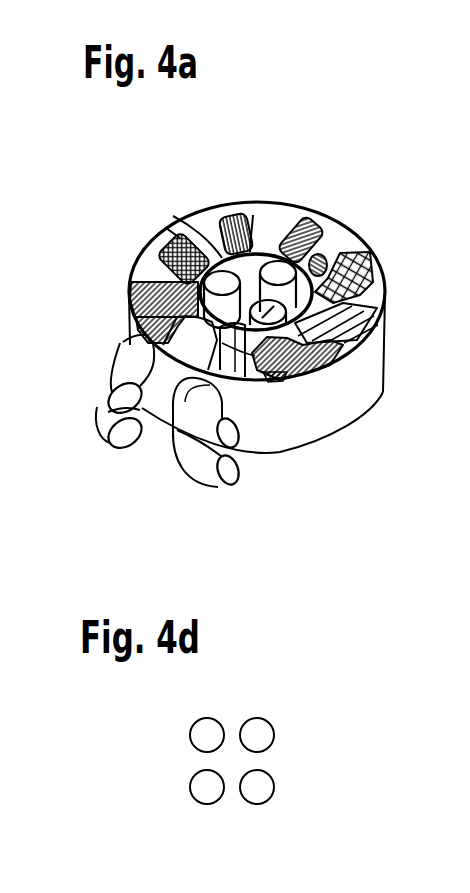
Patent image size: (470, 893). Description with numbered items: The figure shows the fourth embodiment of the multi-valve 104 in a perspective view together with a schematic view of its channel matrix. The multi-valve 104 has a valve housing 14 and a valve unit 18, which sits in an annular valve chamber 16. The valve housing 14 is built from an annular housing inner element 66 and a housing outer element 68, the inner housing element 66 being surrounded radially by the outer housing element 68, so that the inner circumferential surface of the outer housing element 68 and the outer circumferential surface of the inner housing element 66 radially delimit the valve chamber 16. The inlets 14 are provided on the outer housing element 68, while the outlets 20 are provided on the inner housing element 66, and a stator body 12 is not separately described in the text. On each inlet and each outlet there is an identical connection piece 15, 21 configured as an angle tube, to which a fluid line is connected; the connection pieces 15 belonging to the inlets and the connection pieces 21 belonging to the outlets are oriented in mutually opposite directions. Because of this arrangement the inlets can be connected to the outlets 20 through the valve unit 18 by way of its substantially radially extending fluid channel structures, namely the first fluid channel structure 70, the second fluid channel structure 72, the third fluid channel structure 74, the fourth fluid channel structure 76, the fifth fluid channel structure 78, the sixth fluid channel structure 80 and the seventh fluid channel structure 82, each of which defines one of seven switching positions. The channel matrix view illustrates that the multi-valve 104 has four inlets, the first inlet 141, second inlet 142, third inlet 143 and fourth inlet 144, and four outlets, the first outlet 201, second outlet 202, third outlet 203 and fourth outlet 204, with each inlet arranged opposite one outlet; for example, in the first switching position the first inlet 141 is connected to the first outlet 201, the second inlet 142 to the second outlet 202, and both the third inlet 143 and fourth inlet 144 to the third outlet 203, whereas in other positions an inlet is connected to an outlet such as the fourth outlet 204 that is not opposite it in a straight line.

In FIG. 4A, the multi-valve 104 is at (362, 193).
In FIG. 4A, the stator 12 is at (334, 233).
In FIG. 4A, the valve housing 14 is at (172, 418).
In FIG. 4A, the connection piece 15 is at (103, 362).
In FIG. 4A, the valve chamber 16 is at (275, 226).
In FIG. 4A, the valve unit 18 is at (305, 195).
In FIG. 4A, the outlet 20 is at (240, 375).
In FIG. 4A, the connection piece 21 is at (342, 309).
In FIG. 4A, the housing inner element 66 is at (172, 222).
In FIG. 4A, the housing outer element 68 is at (252, 215).
In FIG. 4A, the first fluid channel structure 70 is at (147, 272).
In FIG. 4A, the second fluid channel structure 72 is at (157, 242).
In FIG. 4A, the third fluid channel structure 74 is at (235, 212).
In FIG. 4A, the fourth fluid channel structure 76 is at (380, 266).
In FIG. 4A, the fifth fluid channel structure 78 is at (372, 300).
In FIG. 4A, the sixth fluid channel structure 80 is at (340, 423).
In FIG. 4A, the seventh fluid channel structure 82 is at (272, 452).
In FIG. 4D, the first inlet 141 is at (192, 787).
In FIG. 4D, the second inlet 142 is at (192, 735).
In FIG. 4D, the third inlet 143 is at (272, 735).
In FIG. 4D, the fourth inlet 144 is at (272, 787).
In FIG. 4D, the first outlet 201 is at (203, 802).
In FIG. 4D, the second outlet 202 is at (203, 720).
In FIG. 4D, the third outlet 203 is at (261, 720).
In FIG. 4D, the fourth outlet 204 is at (261, 802).